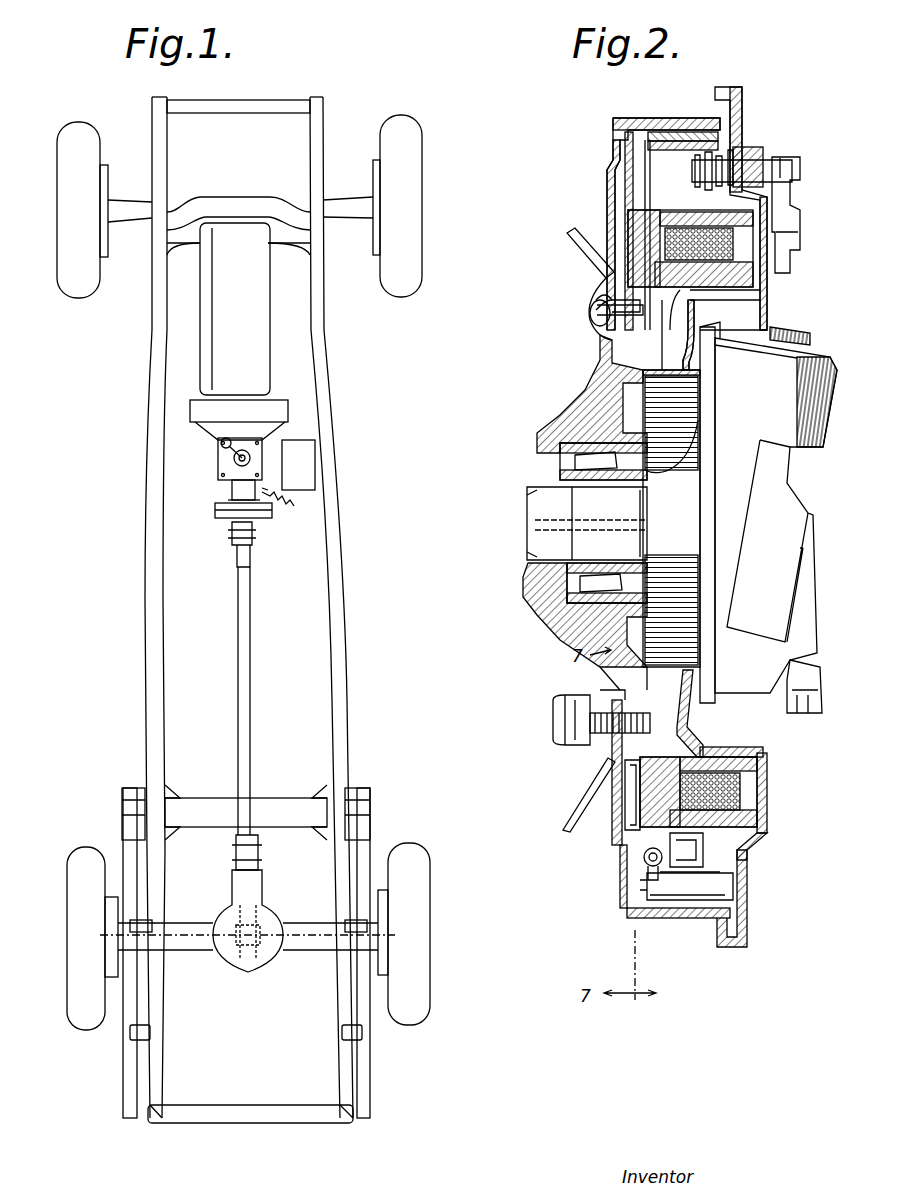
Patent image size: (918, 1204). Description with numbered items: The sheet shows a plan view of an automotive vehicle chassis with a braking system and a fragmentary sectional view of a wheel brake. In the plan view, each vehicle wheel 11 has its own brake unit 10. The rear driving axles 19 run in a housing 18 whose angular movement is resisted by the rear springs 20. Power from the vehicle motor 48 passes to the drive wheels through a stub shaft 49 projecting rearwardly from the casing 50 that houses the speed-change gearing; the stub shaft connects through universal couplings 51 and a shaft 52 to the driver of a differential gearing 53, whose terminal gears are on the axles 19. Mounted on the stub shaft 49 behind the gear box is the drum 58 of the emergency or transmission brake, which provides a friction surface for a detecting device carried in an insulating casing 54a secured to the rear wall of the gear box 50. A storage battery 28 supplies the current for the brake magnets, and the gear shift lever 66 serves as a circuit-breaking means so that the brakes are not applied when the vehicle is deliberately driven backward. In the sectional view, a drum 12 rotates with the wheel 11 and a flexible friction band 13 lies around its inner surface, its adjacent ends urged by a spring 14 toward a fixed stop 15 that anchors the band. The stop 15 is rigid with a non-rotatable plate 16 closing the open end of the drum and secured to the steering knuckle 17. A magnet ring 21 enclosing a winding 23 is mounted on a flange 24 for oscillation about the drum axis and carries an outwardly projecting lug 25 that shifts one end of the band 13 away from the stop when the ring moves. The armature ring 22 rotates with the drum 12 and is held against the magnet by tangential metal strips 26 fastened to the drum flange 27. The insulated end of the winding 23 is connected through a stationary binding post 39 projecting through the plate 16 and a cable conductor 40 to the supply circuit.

In FIG. 1, the brake unit 10 is at (100, 178).
In FIG. 1, the vehicle wheel 11 is at (415, 193).
In FIG. 2, the drum 12 is at (643, 135).
In FIG. 2, the flexible friction band 13 is at (690, 132).
In FIG. 2, the spring 14 is at (645, 866).
In FIG. 2, the fixed stop 15 is at (690, 905).
In FIG. 2, the non-rotatable plate 16 is at (767, 812).
In FIG. 2, the steering knuckle 17 is at (776, 520).
In FIG. 1, the housing 18 is at (195, 950).
In FIG. 1, the rear driving axle 19 is at (195, 923).
In FIG. 1, the rear spring 20 is at (128, 835).
In FIG. 2, the ring 21 is at (695, 212).
In FIG. 2, the ring 22 is at (635, 222).
In FIG. 2, the winding 23 is at (745, 792).
In FIG. 2, the flange 24 is at (735, 290).
In FIG. 2, the lug 25 is at (700, 850).
In FIG. 2, the metal strip 26 is at (632, 820).
In FIG. 2, the drum flange 27 is at (618, 793).
In FIG. 1, the storage battery 28 is at (310, 458).
In FIG. 2, the binding post 39 is at (745, 150).
In FIG. 2, the cable conductor 40 is at (795, 262).
In FIG. 1, the vehicle motor 48 is at (235, 309).
In FIG. 1, the stub shaft 49 is at (232, 490).
In FIG. 1, the casing 50 is at (262, 444).
In FIG. 1, the universal coupling 51 is at (252, 535).
In FIG. 1, the shaft 52 is at (250, 648).
In FIG. 1, the differential gearing 53 is at (272, 905).
In FIG. 1, the casing 54a is at (262, 490).
In FIG. 1, the drum 58 is at (215, 507).
In FIG. 1, the gear shift lever 66 is at (221, 445).